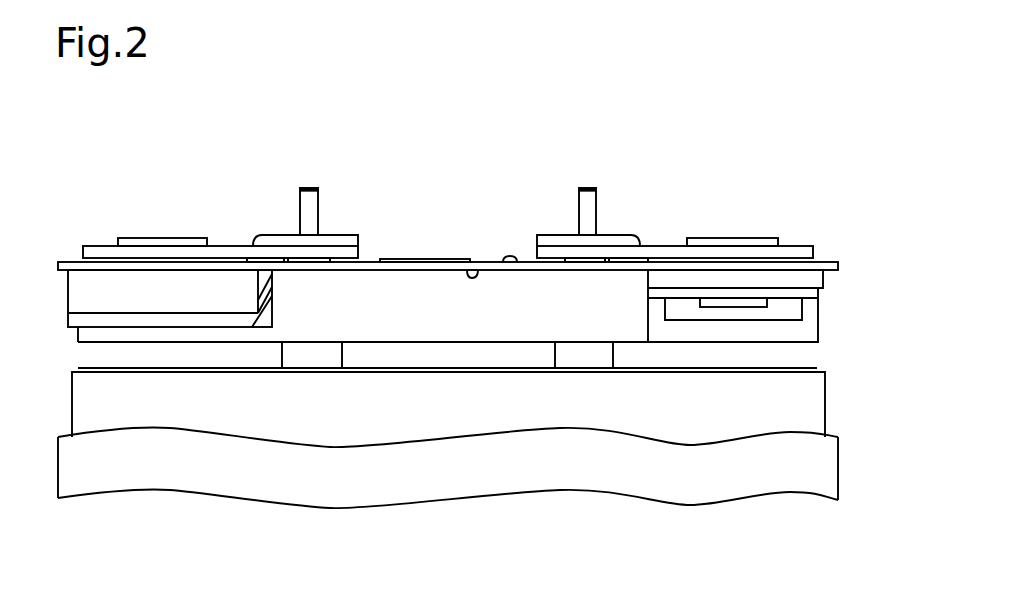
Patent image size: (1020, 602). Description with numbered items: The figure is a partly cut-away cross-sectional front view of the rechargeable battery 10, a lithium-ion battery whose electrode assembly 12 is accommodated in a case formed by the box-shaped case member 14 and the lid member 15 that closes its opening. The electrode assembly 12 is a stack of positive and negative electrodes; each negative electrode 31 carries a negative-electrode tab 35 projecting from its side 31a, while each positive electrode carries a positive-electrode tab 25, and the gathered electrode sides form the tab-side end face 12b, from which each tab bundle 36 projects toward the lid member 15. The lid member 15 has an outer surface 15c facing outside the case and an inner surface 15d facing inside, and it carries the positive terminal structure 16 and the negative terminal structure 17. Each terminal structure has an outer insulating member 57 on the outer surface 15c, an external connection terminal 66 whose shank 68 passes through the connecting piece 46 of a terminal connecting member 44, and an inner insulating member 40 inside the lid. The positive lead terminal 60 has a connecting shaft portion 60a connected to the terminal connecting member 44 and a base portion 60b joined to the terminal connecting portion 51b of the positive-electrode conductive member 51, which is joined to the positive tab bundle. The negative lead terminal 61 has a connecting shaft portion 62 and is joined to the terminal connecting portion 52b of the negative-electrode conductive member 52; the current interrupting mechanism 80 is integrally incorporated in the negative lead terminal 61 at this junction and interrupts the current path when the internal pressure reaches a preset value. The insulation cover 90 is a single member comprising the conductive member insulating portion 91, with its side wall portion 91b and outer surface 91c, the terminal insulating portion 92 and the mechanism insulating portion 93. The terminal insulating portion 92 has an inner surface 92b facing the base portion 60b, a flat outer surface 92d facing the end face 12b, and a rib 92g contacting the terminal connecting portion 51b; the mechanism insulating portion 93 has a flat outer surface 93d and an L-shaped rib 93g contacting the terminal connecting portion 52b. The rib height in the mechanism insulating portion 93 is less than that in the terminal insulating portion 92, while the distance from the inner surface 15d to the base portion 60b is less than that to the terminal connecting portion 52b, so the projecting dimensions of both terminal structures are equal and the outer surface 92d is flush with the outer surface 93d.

The rechargeable battery 10 is at (828, 214).
The electrode assembly 12 is at (825, 400).
The tab-side end face 12b is at (713, 368).
The case member 14 is at (833, 468).
The lid member 15 is at (445, 262).
The outer surface 15c is at (414, 261).
The inner surface 15d is at (475, 261).
The positive terminal structure 16 is at (787, 236).
The negative terminal structure 17 is at (92, 236).
The positive-electrode tab 25 is at (580, 364).
The negative electrode 31 is at (279, 434).
The side of the negative electrode 31a is at (360, 368).
The negative-electrode tab 35 is at (315, 364).
The tab bundle 36 is at (277, 358).
The inner insulating member 40 is at (268, 284).
The terminal connecting member 44 is at (262, 235).
The connecting piece 46 is at (352, 235).
The positive-electrode conductive member 51 is at (648, 294).
The terminal connecting portion 51b is at (655, 322).
The negative-electrode conductive member 52 is at (248, 322).
The terminal connecting portion 52b is at (118, 319).
The outer insulating member 57 is at (230, 246).
The positive lead terminal 60 is at (770, 238).
The connecting shaft portion 60a is at (700, 238).
The base portion 60b is at (738, 322).
The negative lead terminal 61 is at (127, 238).
The connecting shaft portion 62 is at (185, 238).
The external connection terminal 66 is at (310, 188).
The shank 68 is at (318, 192).
The current interrupting mechanism 80 is at (100, 328).
The insulation cover 90 is at (473, 331).
The conductive member insulating portion 91 is at (383, 259).
The side wall portion 91b is at (518, 329).
The outer surface 91c is at (507, 262).
The terminal insulating portion 92 is at (685, 331).
The inner surface 92b is at (780, 316).
The outer surface 92d is at (783, 341).
The rib 92g is at (740, 340).
The mechanism insulating portion 93 is at (173, 341).
The outer surface 93d is at (203, 341).
The rib 93g is at (82, 303).